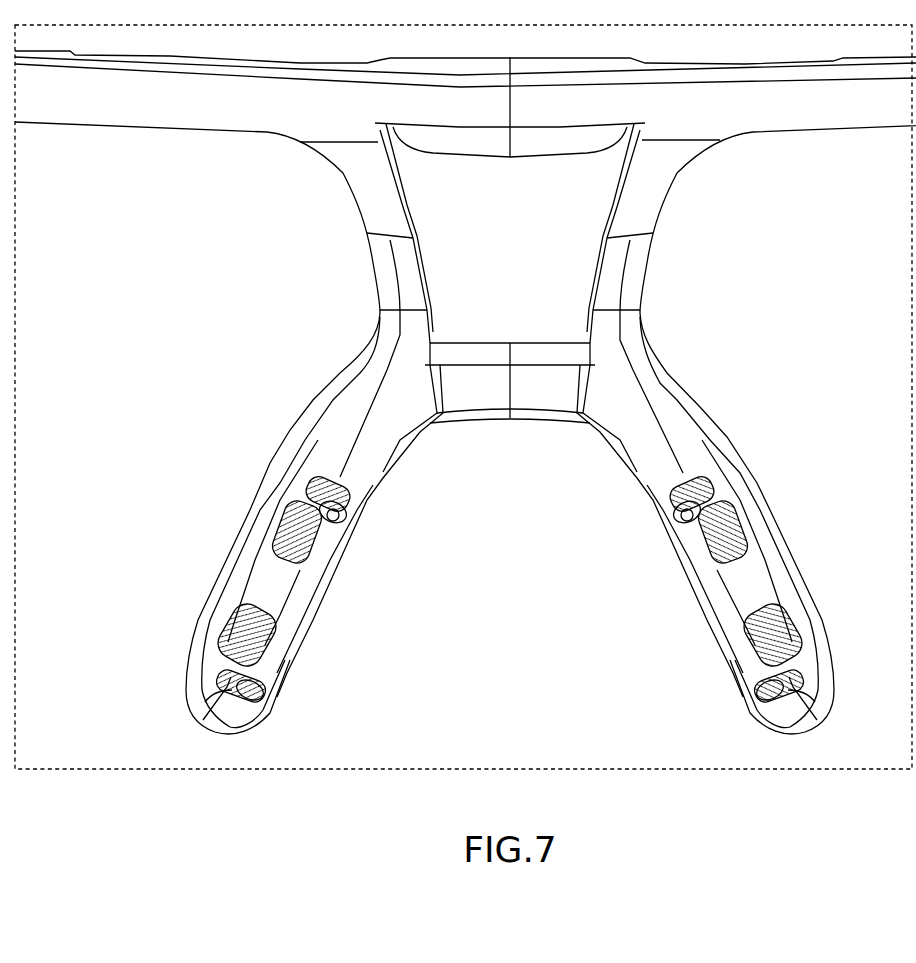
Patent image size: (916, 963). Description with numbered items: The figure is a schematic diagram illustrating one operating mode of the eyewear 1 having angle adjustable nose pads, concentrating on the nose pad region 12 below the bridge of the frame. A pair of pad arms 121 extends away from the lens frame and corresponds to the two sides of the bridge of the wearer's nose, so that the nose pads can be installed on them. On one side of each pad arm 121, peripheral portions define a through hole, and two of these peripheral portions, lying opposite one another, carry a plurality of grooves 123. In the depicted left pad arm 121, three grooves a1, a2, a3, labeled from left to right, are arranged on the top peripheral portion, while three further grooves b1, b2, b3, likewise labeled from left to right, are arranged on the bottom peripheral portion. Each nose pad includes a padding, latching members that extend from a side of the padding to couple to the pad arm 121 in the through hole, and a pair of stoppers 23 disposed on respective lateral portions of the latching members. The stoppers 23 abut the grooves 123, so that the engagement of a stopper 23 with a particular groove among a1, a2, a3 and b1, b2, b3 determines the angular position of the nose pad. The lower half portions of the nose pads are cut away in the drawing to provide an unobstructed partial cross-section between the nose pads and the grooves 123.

The eyeglasses frame 1 is at (865, 141).
The nose pad arm 12 is at (211, 561).
The pad arm 121 is at (320, 448).
The stopper 23 is at (303, 497).
The grooves 123 is at (510, 618).
The groove a1 is at (332, 487).
The groove a2 is at (340, 503).
The groove a3 is at (338, 519).
The groove b1 is at (210, 695).
The groove b2 is at (230, 697).
The groove b3 is at (250, 677).